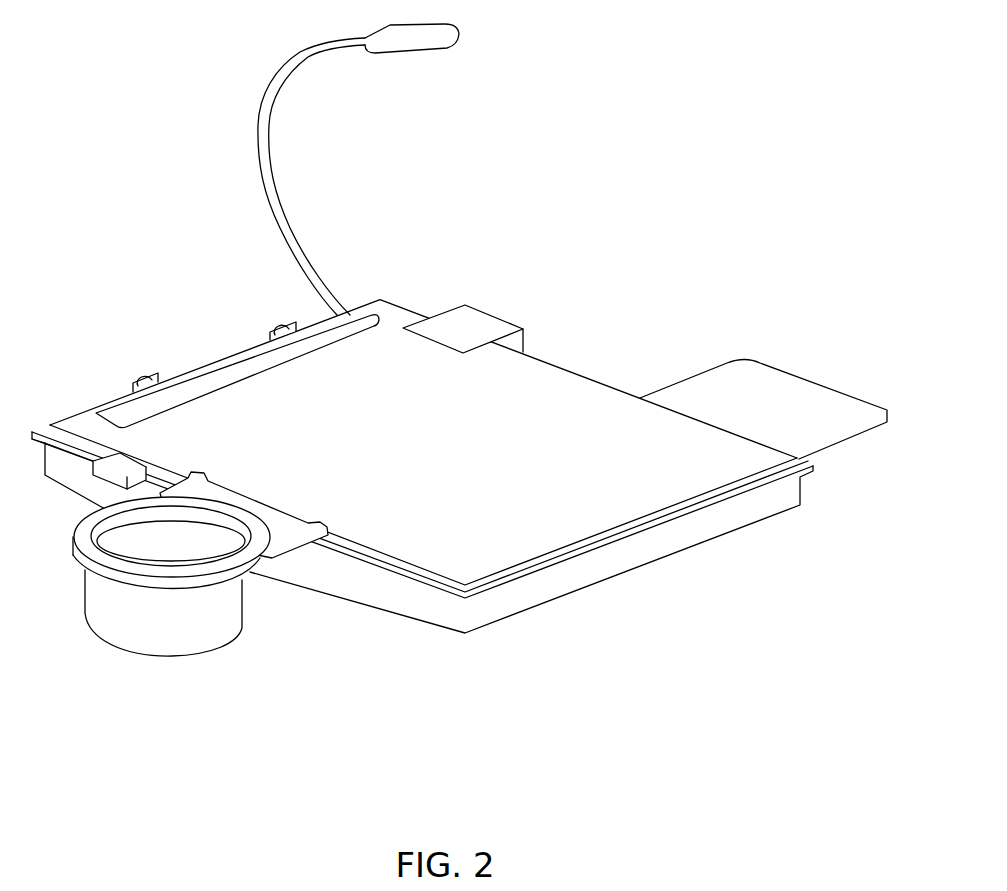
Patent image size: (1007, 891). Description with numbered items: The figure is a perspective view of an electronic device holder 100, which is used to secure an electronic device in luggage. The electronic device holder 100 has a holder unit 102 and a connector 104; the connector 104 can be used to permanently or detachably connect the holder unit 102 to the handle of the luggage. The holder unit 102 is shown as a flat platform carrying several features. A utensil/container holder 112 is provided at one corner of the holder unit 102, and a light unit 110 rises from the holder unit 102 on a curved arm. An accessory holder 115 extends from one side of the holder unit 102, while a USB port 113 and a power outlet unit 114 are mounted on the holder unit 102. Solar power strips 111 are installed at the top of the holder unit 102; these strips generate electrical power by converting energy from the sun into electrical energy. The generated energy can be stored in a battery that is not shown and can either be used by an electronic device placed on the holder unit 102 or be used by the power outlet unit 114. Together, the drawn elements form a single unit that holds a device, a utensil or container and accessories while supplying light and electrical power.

The electronic device holder 100 is at (398, 305).
The holder unit 102 is at (568, 396).
The connector 104 is at (283, 323).
The light unit 110 is at (430, 47).
The solar power strips 111 is at (200, 381).
The utensil/container holder 112 is at (272, 555).
The USB port 113 is at (100, 468).
The power outlet unit 114 is at (475, 327).
The accessory holder 115 is at (770, 381).